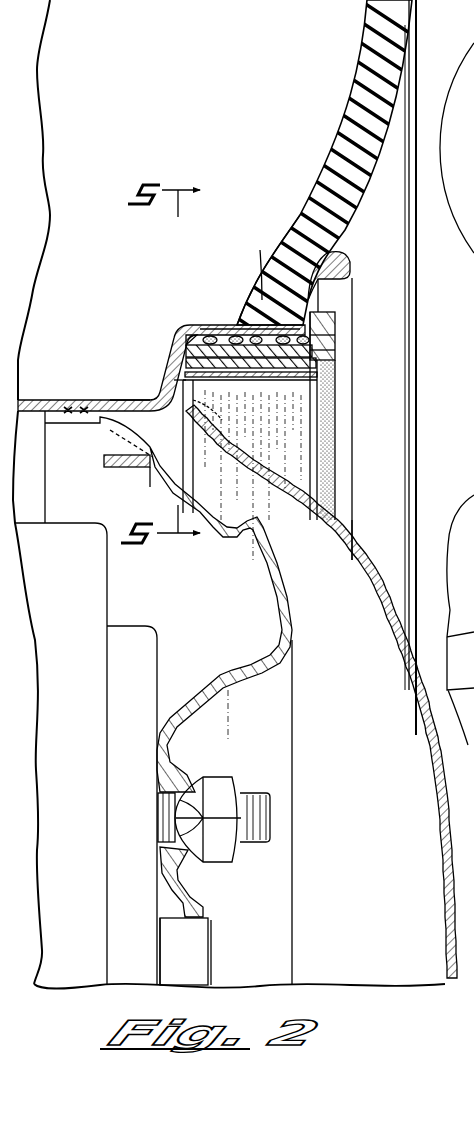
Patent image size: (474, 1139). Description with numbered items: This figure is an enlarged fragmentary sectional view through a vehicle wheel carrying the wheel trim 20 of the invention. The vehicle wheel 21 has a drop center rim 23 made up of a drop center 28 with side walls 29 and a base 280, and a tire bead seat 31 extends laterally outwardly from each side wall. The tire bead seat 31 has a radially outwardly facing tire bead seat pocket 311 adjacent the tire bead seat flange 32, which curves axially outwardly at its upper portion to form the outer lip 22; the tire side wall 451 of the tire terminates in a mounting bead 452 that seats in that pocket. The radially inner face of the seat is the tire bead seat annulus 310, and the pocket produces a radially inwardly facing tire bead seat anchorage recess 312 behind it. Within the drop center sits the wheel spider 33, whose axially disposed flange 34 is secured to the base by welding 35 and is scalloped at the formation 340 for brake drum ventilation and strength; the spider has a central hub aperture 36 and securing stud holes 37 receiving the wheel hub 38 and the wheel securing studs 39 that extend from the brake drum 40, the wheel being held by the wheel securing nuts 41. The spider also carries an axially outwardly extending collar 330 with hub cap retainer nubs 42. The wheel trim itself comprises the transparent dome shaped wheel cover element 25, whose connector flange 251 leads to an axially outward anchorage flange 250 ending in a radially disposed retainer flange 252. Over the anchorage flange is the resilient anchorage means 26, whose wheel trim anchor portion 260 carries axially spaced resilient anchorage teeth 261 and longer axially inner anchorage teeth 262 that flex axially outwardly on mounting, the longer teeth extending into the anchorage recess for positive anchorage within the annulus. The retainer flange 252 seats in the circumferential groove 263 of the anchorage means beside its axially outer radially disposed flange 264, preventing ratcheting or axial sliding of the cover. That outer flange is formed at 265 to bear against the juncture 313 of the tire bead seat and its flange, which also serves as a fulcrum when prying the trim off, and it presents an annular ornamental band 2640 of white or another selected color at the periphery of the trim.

The vehicle wheel trim 20 is at (345, 520).
The vehicle wheel 21 is at (355, 470).
The outer lip 22 is at (342, 252).
The drop center rim 23 is at (80, 398).
The wheel cover element 25 is at (362, 552).
The resilient anchorage means 26 is at (176, 343).
The drop center 28 is at (60, 399).
The side walls 29 is at (172, 368).
The tire bead seat 31 is at (322, 400).
The tire bead seat flange 32 is at (350, 265).
The wheel spider 33 is at (238, 682).
The axially disposed flange 34 is at (35, 415).
The welding 35 is at (83, 413).
The central hub aperture 36 is at (182, 925).
The securing stud holes 37 is at (178, 796).
The wheel hub 38 is at (198, 970).
The wheel securing studs 39 is at (273, 828).
The brake drum 40 is at (146, 660).
The wheel securing nuts 41 is at (228, 850).
The hub cap retainer nubs 42 is at (258, 515).
The anchorage flange 250 is at (305, 380).
The connector flange 251 is at (205, 402).
The retainer flange 252 is at (330, 374).
The wheel trim anchor portion 260 is at (218, 378).
The anchorage teeth 261 is at (238, 338).
The axially inner anchorage teeth 262 is at (232, 345).
The circumferential groove 263 is at (335, 350).
The axially outer radially disposed flange 264 is at (330, 385).
The bearing formation 265 is at (335, 335).
The ornamental band 2640 is at (335, 318).
The base 280 is at (135, 400).
The tire bead seat annulus 310 is at (268, 384).
The tire bead seat pocket 311 is at (245, 322).
The tire bead seat anchorage recess 312 is at (200, 352).
The juncture 313 is at (262, 290).
The collar 330 is at (290, 606).
The scalloped formation 340 is at (120, 462).
The tire side wall 451 is at (343, 192).
The mounting bead 452 is at (290, 272).